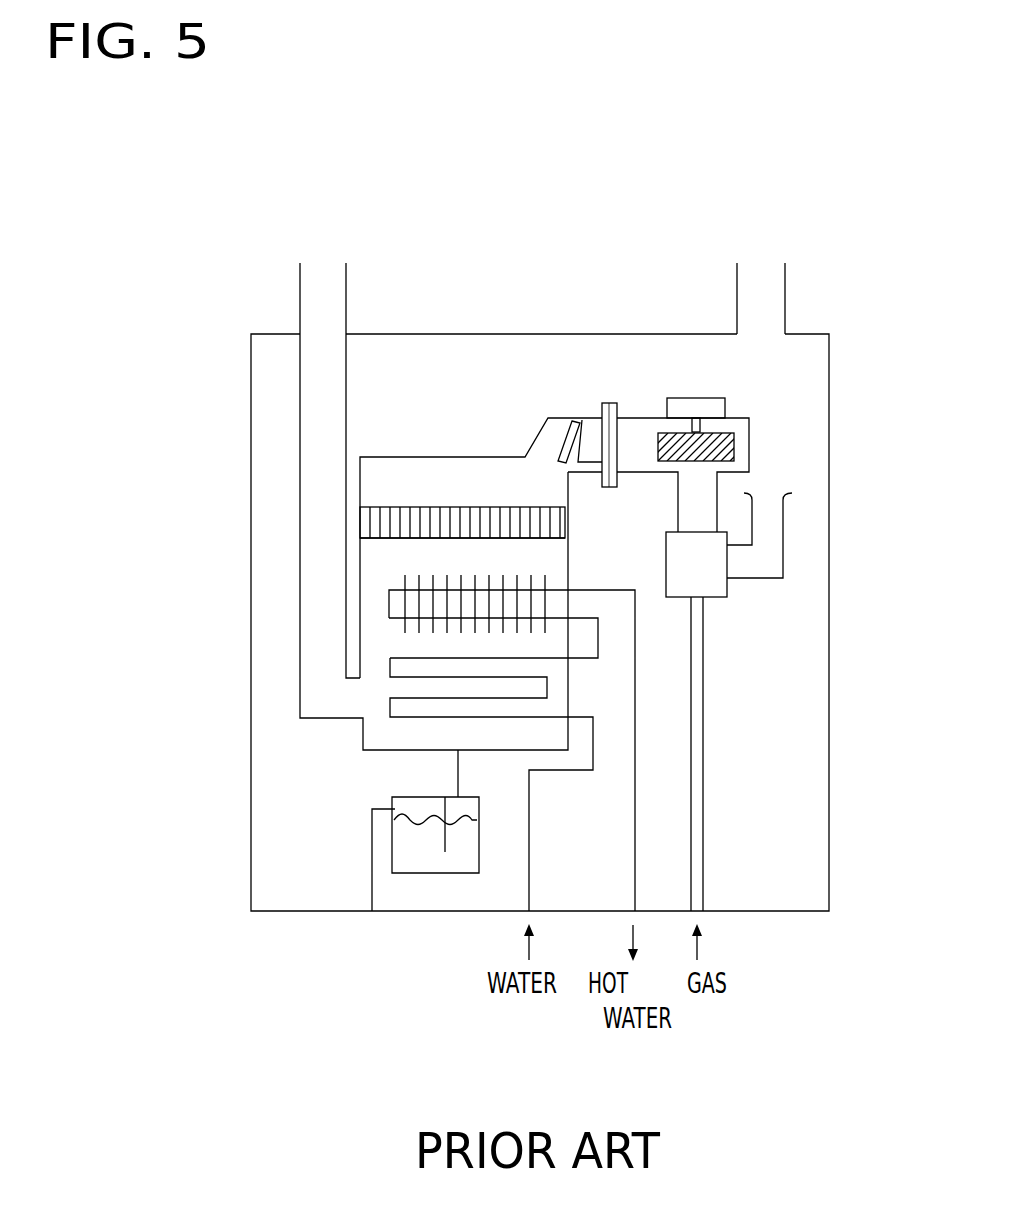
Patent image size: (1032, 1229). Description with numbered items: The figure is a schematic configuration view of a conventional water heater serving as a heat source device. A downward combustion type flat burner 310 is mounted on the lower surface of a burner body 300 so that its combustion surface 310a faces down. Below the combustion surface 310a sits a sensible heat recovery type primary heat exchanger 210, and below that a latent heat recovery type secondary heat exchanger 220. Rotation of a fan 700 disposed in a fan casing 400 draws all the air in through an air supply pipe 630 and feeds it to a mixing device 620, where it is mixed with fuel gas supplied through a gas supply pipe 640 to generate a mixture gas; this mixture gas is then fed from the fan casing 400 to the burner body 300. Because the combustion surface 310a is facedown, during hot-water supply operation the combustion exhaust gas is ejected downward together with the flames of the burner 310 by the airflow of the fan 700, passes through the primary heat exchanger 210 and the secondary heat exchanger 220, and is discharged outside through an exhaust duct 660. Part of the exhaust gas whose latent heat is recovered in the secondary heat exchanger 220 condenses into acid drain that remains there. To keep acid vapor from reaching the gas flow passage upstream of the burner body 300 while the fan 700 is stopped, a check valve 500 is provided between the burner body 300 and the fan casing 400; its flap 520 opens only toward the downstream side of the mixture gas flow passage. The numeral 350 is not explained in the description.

The sensible heat recovery type-primary heat exchanger 210 is at (390, 603).
The latent heat recovery type-secondary heat exchanger 220 is at (387, 707).
The burner body 300 is at (443, 457).
The burner 310 is at (415, 507).
The combustion surface 310a is at (405, 539).
The exhaust valve 350 is at (624, 455).
The fan casing 400 is at (737, 416).
The check valve 500 is at (548, 418).
The flap 520 is at (558, 434).
The mixing device 620 is at (710, 598).
The air supply pipe 630 is at (783, 558).
The gas supply pipe 640 is at (703, 813).
The exhaust duct 660 is at (300, 395).
The fan 700 is at (735, 455).